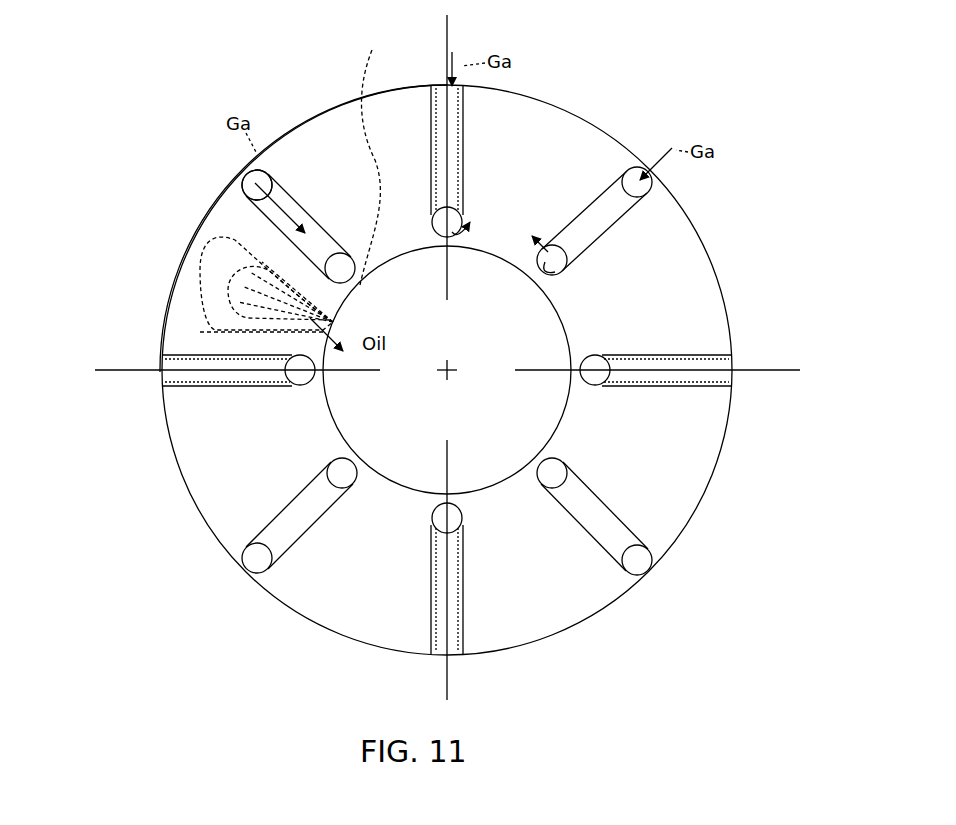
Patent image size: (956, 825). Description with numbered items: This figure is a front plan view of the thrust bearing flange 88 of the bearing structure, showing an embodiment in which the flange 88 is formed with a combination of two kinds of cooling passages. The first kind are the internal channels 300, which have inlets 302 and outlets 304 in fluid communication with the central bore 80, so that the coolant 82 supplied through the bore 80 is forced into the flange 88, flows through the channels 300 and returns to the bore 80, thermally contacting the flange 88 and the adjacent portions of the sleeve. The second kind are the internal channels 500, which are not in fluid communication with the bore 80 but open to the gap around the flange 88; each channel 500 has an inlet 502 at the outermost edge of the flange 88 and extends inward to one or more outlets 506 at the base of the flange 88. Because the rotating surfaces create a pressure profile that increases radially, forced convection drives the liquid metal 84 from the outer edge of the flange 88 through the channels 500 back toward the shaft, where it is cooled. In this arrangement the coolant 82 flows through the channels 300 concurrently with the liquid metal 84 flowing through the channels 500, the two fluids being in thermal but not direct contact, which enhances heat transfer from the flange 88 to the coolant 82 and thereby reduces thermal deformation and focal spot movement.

The bore 80 is at (330, 410).
The coolant 82 is at (330, 300).
The liquid metal 84 is at (645, 170).
The thrust bearing flange 88 is at (300, 110).
The internal channels 300 is at (195, 292).
The inlets 302 is at (262, 272).
The outlets 304 is at (200, 332).
The internal channels 500 is at (590, 185).
The inlet 502 is at (250, 200).
The outlets 506 is at (377, 157).